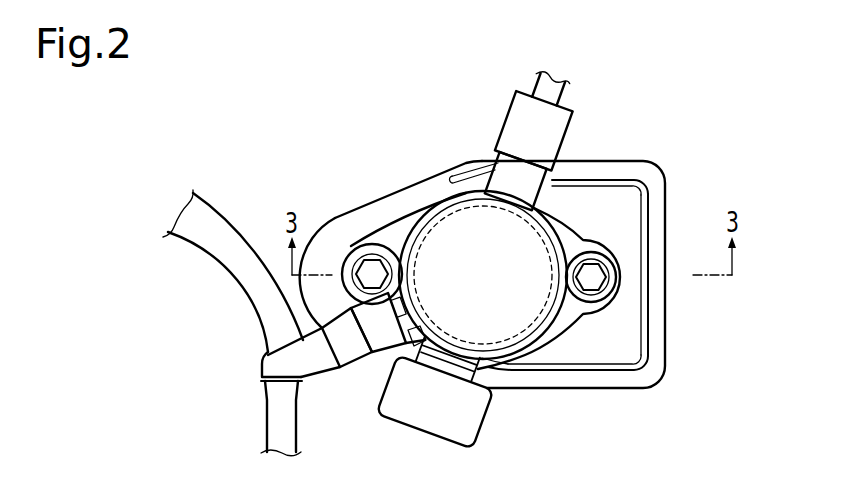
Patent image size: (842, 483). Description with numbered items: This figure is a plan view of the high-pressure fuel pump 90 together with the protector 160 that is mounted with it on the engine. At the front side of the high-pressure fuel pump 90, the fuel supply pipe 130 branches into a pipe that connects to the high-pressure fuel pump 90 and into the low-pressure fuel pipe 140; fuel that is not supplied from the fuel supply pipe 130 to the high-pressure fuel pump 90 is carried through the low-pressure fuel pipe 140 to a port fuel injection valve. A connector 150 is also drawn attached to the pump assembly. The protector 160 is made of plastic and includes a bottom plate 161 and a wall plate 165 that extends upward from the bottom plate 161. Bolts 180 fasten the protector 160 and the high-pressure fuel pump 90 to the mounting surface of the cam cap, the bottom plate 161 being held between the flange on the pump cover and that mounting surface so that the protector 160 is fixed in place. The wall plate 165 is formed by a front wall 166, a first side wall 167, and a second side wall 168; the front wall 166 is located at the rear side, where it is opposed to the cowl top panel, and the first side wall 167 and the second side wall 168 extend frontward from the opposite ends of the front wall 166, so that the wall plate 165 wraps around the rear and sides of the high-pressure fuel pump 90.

The high-pressure fuel pump 90 is at (448, 228).
The fuel supply pipe 130 is at (297, 425).
The low-pressure fuel pipe 140 is at (213, 212).
The connector 150 is at (538, 87).
The protector 160 is at (671, 121).
The bottom plate 161 is at (323, 240).
The wall plate 165 is at (660, 200).
The front wall 166 is at (660, 334).
The first side wall 167 is at (608, 383).
The second side wall 168 is at (617, 172).
The bolts 180 is at (373, 244).